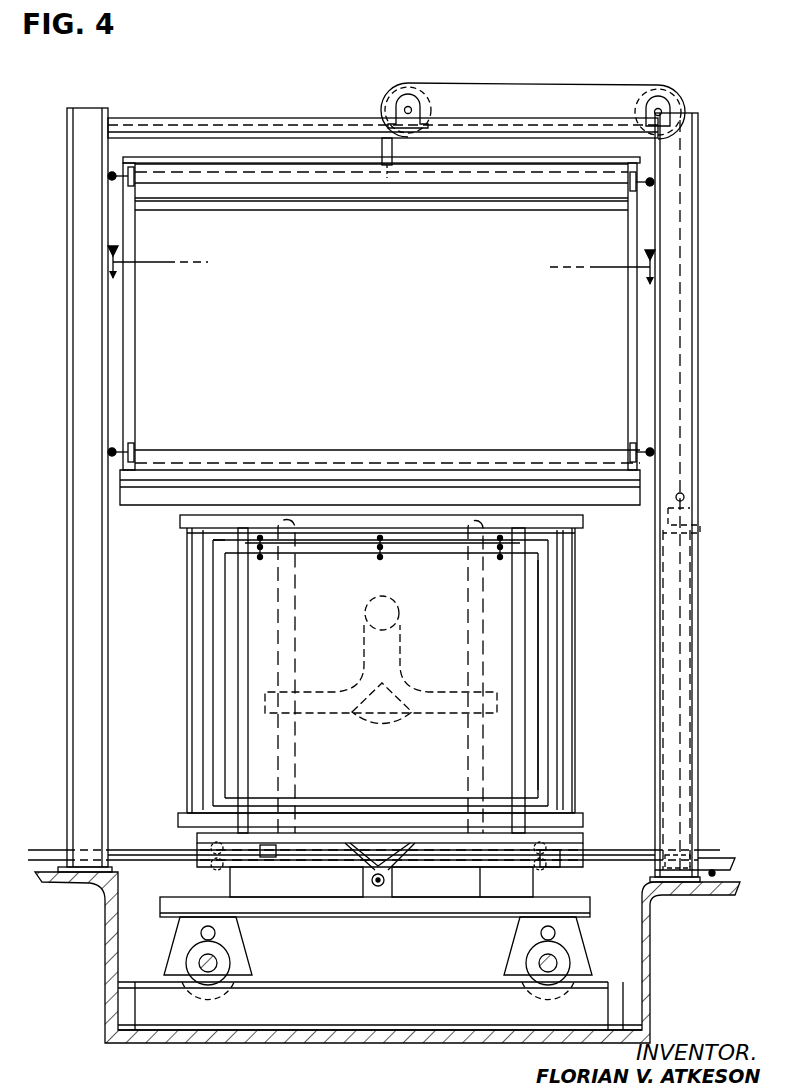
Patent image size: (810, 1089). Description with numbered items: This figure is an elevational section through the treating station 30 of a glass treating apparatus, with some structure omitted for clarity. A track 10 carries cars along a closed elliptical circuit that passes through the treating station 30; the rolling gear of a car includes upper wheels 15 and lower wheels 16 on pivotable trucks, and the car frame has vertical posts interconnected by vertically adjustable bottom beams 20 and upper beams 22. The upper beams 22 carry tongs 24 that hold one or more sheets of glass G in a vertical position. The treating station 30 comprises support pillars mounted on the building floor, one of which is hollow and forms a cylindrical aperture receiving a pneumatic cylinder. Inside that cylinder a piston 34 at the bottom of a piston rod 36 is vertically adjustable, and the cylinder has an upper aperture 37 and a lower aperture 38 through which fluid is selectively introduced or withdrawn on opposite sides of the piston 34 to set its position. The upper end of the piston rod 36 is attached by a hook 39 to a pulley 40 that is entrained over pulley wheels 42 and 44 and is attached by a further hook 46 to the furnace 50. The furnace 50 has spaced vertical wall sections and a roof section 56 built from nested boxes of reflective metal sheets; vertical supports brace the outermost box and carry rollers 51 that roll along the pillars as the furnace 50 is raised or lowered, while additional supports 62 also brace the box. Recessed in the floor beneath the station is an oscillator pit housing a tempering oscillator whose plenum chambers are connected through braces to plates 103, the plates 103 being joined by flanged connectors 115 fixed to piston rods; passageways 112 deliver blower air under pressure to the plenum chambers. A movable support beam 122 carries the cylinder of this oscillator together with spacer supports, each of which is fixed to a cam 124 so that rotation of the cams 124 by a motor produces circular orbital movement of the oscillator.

The track 10 is at (616, 856).
The upper wheels 15 is at (575, 840).
The lower wheels 16 is at (545, 873).
The bottom beams 20 is at (325, 833).
The upper beams 22 is at (312, 533).
The tongs 24 is at (383, 545).
The treating station 30 is at (640, 966).
The piston 34 is at (676, 858).
The piston rod 36 is at (685, 548).
The upper aperture 37 is at (703, 523).
The lower aperture 38 is at (716, 873).
The hook 39 is at (690, 494).
The pulley 40 is at (540, 86).
The pulley wheel 42 is at (686, 106).
The pulley wheel 44 is at (432, 108).
The hook 46 is at (385, 150).
The furnace 50 is at (178, 218).
The rollers 51 is at (652, 180).
The roof section 56 is at (298, 165).
The supports 62 is at (527, 470).
The glass G is at (542, 640).
The plates 103 is at (268, 845).
The passageways 112 is at (381, 677).
The flanged connectors 115 is at (392, 868).
The support beam 122 is at (412, 915).
The cams 124 is at (532, 970).